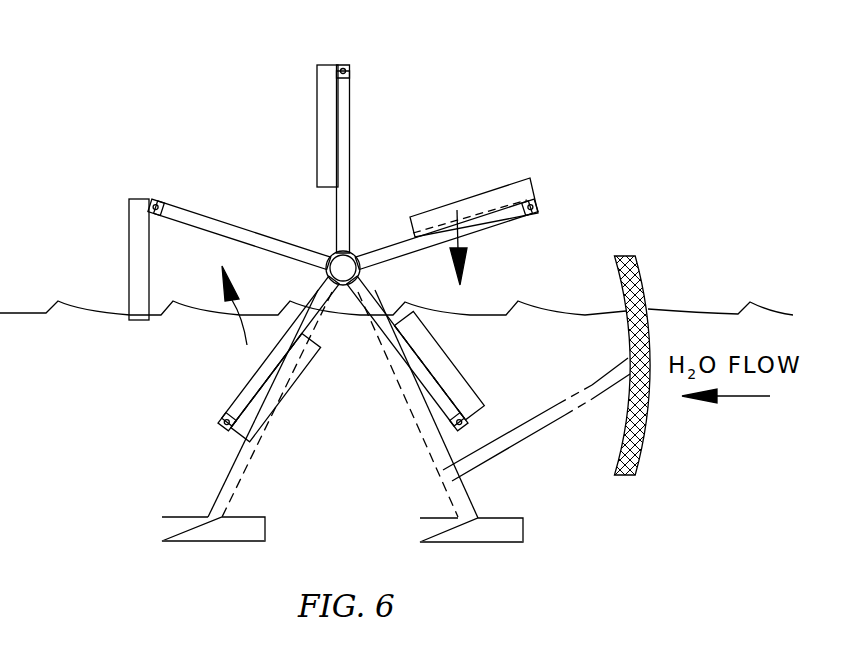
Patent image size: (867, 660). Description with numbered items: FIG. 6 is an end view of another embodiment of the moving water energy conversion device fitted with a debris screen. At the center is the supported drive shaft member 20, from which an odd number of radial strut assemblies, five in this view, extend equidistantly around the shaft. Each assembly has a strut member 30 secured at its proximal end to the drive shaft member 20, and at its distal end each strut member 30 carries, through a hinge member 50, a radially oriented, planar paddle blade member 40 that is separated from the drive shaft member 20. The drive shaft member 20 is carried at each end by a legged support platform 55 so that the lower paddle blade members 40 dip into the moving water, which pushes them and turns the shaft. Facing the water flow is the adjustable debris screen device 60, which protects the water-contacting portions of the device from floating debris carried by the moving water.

The drive shaft member 20 is at (353, 254).
The strut member 30 is at (353, 136).
The paddle blade member 40 is at (326, 128).
The hinge member 50 is at (347, 64).
The legged support platform 55 is at (221, 477).
The debris screen device 60 is at (643, 282).